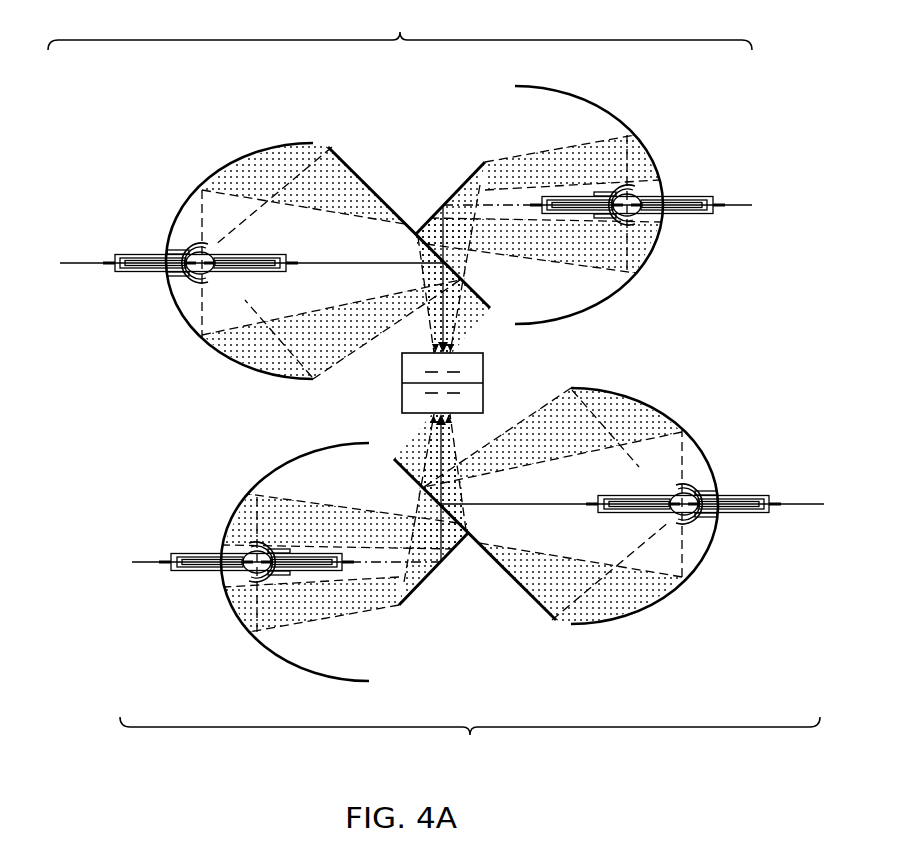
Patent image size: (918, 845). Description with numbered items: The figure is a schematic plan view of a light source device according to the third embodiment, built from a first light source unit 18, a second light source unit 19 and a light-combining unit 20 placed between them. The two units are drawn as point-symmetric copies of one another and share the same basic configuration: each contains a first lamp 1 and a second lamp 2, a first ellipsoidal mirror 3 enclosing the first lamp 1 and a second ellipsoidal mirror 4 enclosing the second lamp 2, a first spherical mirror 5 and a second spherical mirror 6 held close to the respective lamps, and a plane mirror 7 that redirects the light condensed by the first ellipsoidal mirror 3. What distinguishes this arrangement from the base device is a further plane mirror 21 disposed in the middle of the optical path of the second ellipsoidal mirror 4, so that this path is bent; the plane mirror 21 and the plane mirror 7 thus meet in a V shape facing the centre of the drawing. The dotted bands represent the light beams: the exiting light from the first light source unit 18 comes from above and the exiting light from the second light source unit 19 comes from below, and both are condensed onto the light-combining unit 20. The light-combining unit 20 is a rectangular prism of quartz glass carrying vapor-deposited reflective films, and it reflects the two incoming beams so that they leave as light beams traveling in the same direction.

The first lamp 1 is at (130, 254).
The second lamp 2 is at (710, 196).
The first ellipsoidal mirror 3 is at (262, 150).
The second ellipsoidal mirror 4 is at (593, 104).
The first spherical mirror 5 is at (172, 248).
The second spherical mirror 6 is at (598, 222).
The plane mirror 7 is at (366, 184).
The first light source unit 18 is at (400, 28).
The second light source unit 19 is at (470, 742).
The light-combining unit 20 is at (483, 372).
The plane mirror 21 is at (470, 177).